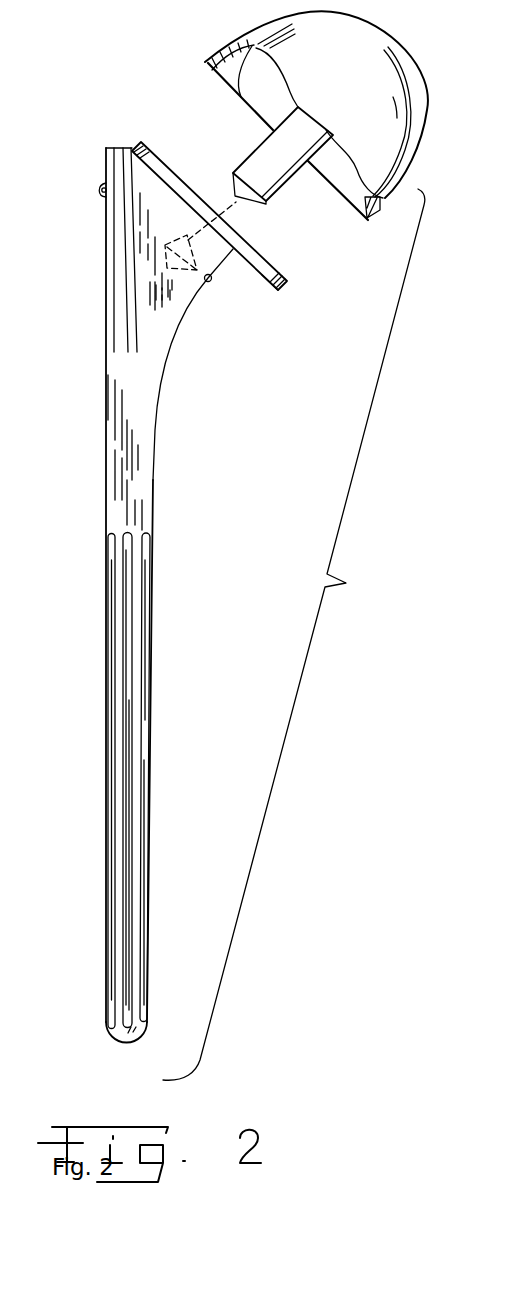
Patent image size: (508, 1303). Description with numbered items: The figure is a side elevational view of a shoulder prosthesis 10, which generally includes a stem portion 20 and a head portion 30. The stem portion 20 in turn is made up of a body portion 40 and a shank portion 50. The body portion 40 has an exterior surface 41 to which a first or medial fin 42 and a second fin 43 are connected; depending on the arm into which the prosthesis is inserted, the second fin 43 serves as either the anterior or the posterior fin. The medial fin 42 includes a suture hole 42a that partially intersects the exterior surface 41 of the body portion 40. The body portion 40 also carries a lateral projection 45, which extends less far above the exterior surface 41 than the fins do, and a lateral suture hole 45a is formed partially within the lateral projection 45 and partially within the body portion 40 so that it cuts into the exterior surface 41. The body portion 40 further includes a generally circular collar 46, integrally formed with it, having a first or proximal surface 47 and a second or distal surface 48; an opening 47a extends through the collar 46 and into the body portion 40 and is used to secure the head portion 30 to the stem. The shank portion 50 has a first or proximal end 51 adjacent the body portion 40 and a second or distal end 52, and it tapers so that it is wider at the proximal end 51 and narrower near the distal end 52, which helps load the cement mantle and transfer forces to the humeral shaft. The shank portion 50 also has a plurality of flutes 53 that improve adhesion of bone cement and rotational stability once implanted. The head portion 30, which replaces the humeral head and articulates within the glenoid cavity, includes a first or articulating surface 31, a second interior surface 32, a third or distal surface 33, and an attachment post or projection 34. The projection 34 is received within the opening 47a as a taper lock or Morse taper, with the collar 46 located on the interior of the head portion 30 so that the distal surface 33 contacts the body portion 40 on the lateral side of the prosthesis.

The shoulder prosthesis 10 is at (294, 634).
The stem portion 20 is at (195, 508).
The head portion 30 is at (426, 178).
The articulating surface 31 is at (410, 57).
The interior surface 32 is at (237, 98).
The distal surface 33 is at (205, 71).
The attachment post 34 is at (303, 170).
The body portion 40 is at (98, 300).
The exterior surface 41 is at (112, 332).
The medial fin 42 is at (200, 297).
The suture hole 42a is at (211, 282).
The second fin 43 is at (123, 244).
The lateral projection 45 is at (102, 199).
The lateral suture hole 45a is at (103, 188).
The collar 46 is at (289, 284).
The proximal surface 47 is at (257, 257).
The opening 47a is at (193, 243).
The distal surface 48 is at (263, 290).
The shank portion 50 is at (158, 876).
The proximal end 51 is at (145, 451).
The distal end 52 is at (127, 1036).
The flutes 53 is at (147, 686).